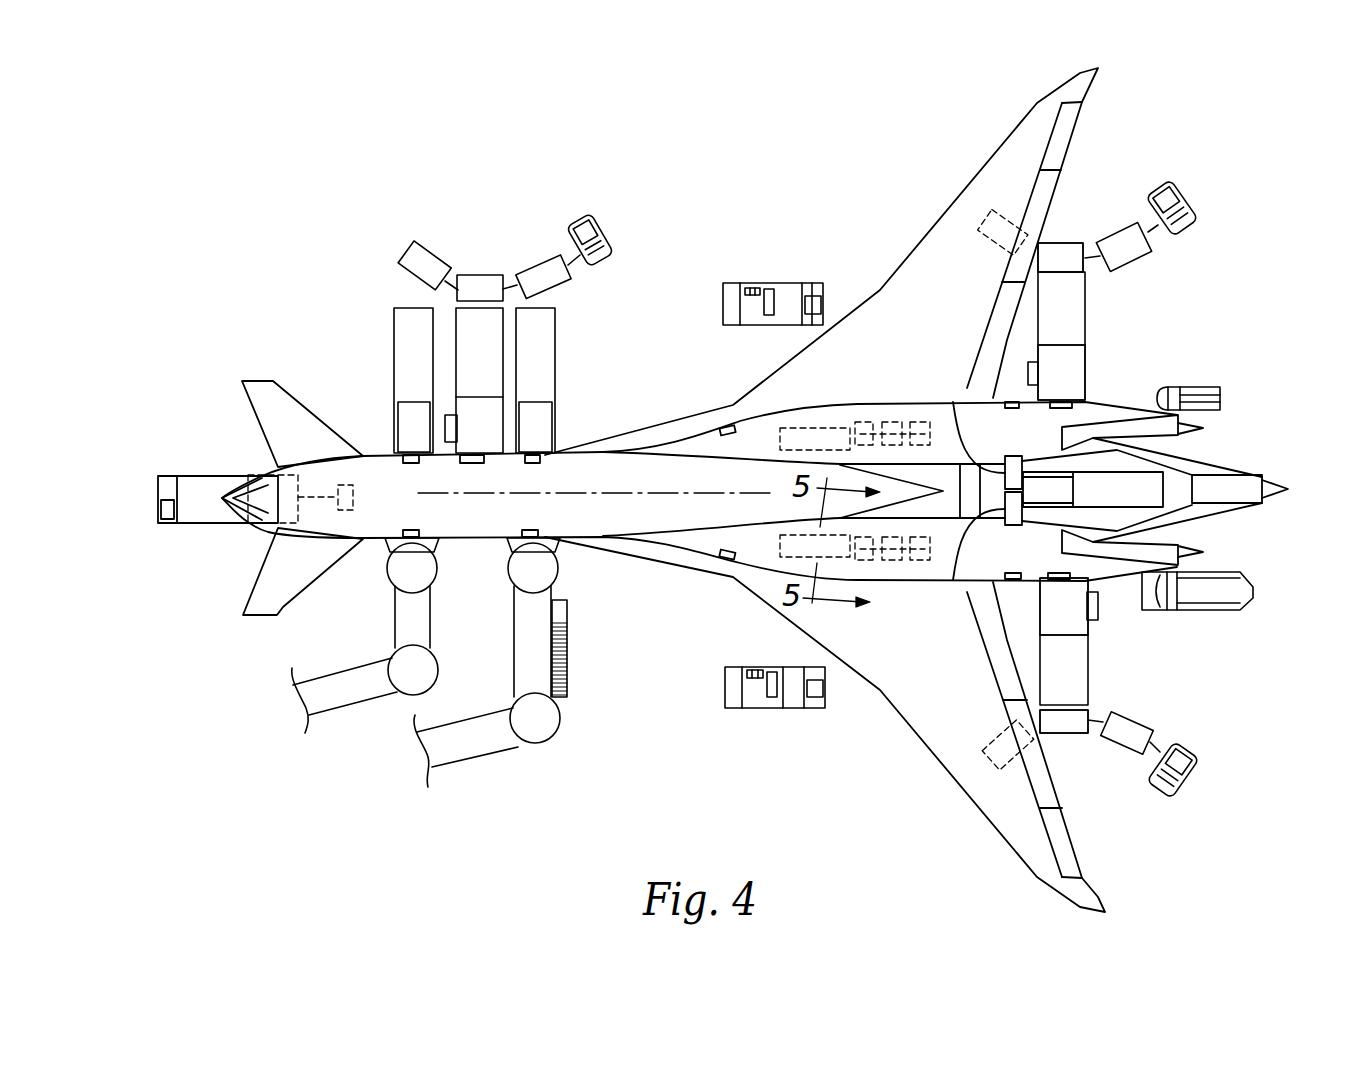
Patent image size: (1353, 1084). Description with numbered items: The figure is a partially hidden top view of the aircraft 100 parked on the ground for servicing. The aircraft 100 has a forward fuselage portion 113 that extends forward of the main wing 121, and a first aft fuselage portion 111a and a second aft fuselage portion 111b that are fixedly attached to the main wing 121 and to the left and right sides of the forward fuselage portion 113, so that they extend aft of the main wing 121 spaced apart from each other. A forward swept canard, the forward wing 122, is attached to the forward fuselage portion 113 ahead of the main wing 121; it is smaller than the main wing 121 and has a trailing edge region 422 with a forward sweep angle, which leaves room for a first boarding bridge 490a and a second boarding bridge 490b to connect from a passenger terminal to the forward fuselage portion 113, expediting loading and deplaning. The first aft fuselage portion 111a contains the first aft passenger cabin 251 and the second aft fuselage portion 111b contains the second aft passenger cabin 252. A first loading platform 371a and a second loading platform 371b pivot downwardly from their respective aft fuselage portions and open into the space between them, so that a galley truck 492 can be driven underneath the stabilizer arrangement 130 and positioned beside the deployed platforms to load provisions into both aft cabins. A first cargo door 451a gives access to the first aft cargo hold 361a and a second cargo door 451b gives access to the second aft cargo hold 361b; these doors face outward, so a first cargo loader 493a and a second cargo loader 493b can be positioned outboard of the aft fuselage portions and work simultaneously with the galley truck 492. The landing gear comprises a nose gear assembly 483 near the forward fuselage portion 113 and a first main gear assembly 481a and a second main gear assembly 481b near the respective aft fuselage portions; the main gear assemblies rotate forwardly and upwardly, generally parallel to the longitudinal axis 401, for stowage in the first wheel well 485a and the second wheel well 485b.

The aircraft 100 is at (636, 657).
The first aft fuselage portion 111a is at (1110, 578).
The second aft fuselage portion 111b is at (1097, 412).
The forward fuselage portion 113 is at (370, 452).
The main wing 121 is at (1105, 902).
The forward wing 122 is at (247, 395).
The stabilizer arrangement 130 is at (1242, 444).
The first aft passenger cabin 251 is at (1010, 548).
The second aft passenger cabin 252 is at (990, 417).
The first aft cargo hold 361a is at (1063, 562).
The second aft cargo hold 361b is at (1063, 422).
The first loading platform 371a is at (955, 580).
The second loading platform 371b is at (957, 402).
The longitudinal axis 401 is at (608, 492).
The trailing edge region 422 is at (303, 600).
The first cargo door 451a is at (1073, 582).
The second cargo door 451b is at (1067, 398).
The first main gear assembly 481a is at (880, 560).
The second main gear assembly 481b is at (867, 422).
The nose gear assembly 483 is at (340, 486).
The first wheel well 485a is at (778, 552).
The second wheel well 485b is at (777, 430).
The first boarding bridge 490a is at (340, 715).
The second boarding bridge 490b is at (465, 762).
The galley truck 492 is at (1157, 488).
The first cargo loader 493a is at (1088, 690).
The second cargo loader 493b is at (1085, 300).